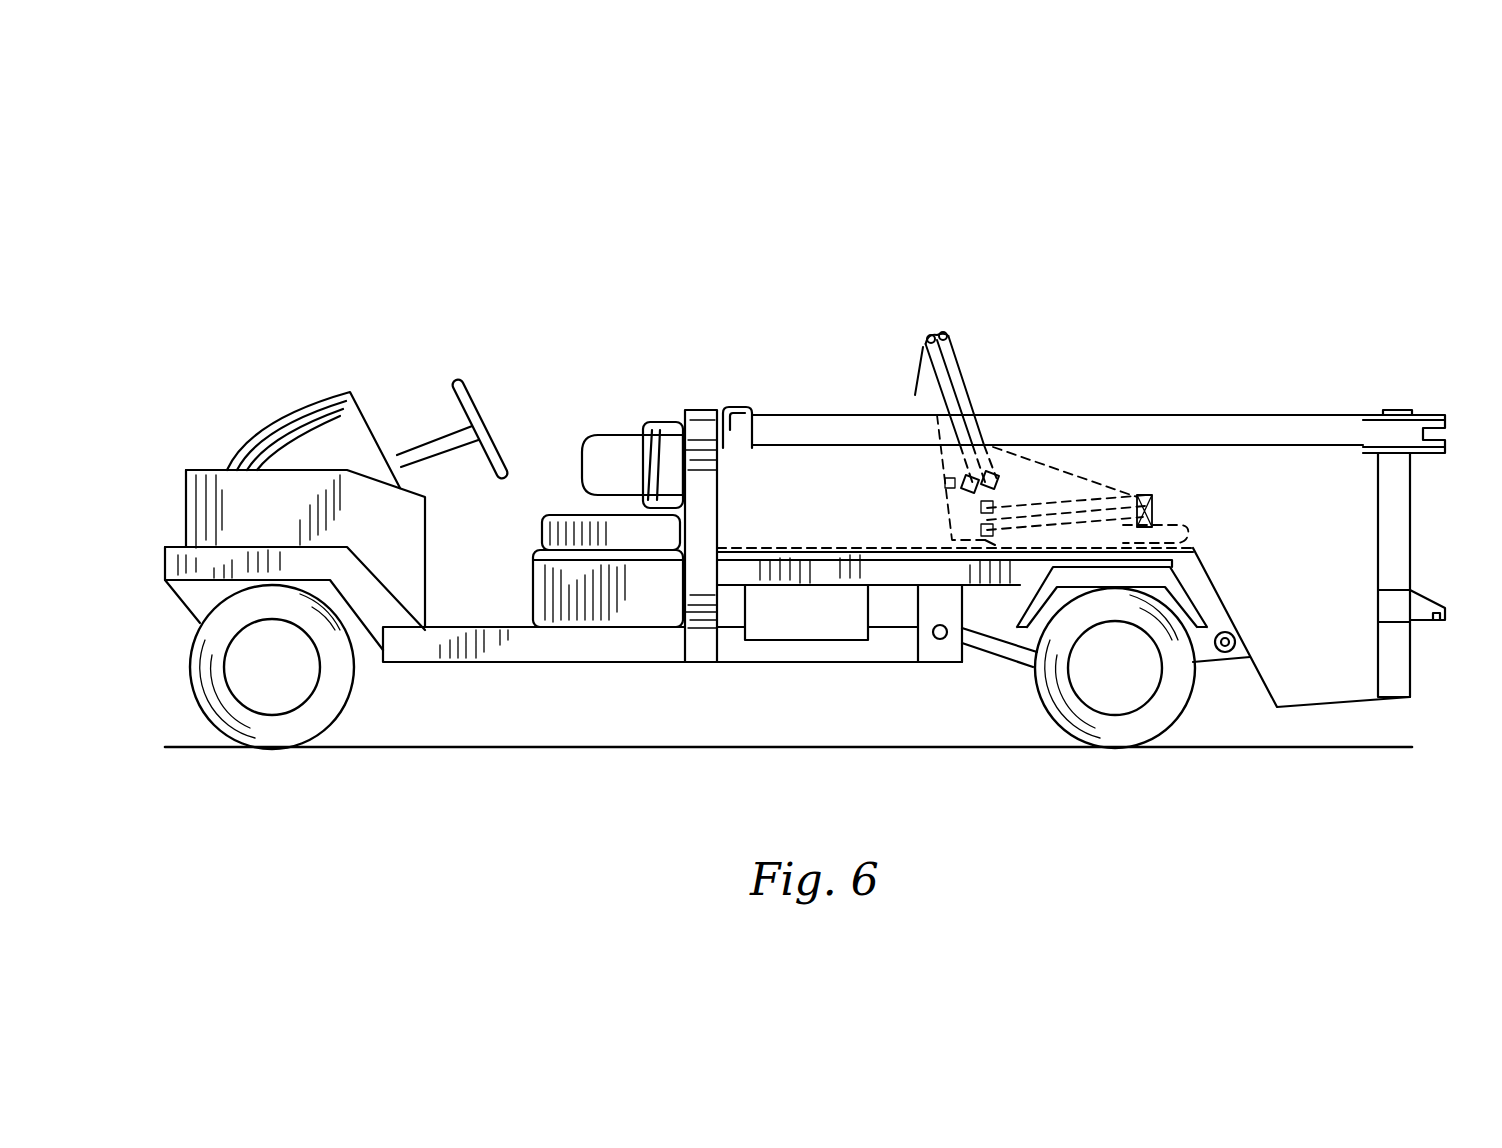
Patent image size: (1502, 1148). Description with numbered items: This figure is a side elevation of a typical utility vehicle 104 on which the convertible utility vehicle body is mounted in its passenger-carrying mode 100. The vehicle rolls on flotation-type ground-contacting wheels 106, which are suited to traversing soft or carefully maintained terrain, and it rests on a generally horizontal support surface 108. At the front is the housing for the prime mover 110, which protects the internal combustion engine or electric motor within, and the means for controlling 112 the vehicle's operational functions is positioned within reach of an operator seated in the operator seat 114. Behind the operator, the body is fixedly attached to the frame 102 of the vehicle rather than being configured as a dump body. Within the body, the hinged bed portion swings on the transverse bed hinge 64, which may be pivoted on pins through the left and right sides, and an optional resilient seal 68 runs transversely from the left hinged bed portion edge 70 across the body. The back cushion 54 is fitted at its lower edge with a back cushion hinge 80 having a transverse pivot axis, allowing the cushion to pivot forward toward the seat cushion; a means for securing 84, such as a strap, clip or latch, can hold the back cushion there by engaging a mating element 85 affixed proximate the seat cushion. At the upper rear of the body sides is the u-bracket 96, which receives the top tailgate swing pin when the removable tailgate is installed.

The back cushion 54 is at (958, 382).
The transverse bed hinge 64 is at (1177, 537).
The resilient seal 68 is at (1193, 547).
The left hinged bed portion edge 70 is at (995, 537).
The back cushion hinge 80 is at (945, 483).
The means for securing 84 is at (913, 388).
The mating element 85 is at (1162, 522).
The u-bracket 96 is at (1435, 412).
The passenger-carrying mode 100 is at (1160, 345).
The frame 102 is at (897, 623).
The utility vehicle 104 is at (953, 268).
The flotation-type ground-contacting wheels 106 is at (302, 728).
The generally horizontal support surface 108 is at (1363, 745).
The housing for the prime mover 110 is at (565, 622).
The means for controlling 112 is at (458, 378).
The operator seat 114 is at (557, 517).